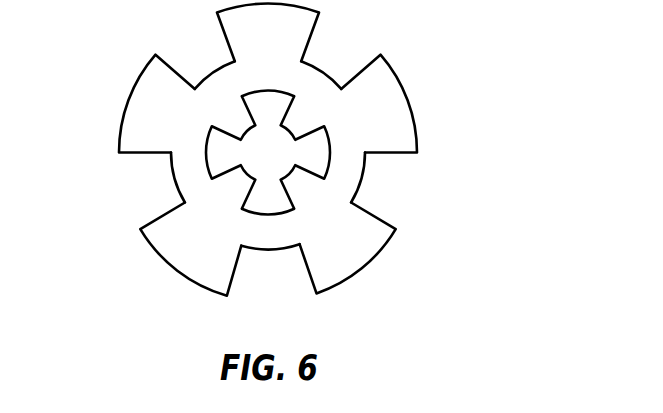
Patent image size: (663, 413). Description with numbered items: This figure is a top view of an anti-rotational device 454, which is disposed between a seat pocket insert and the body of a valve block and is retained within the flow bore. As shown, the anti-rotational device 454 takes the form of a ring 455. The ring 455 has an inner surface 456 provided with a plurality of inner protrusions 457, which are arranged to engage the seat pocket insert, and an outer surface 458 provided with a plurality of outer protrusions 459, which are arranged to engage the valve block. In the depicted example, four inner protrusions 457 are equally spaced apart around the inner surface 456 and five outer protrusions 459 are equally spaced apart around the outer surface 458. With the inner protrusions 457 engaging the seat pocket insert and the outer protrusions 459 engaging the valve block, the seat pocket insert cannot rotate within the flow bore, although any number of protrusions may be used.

The anti-rotational device 454 is at (306, 151).
The ring 455 is at (322, 216).
The inner surface 456 is at (350, 167).
The inner protrusions 457 is at (303, 120).
The outer surface 458 is at (210, 70).
The outer protrusions 459 is at (145, 108).